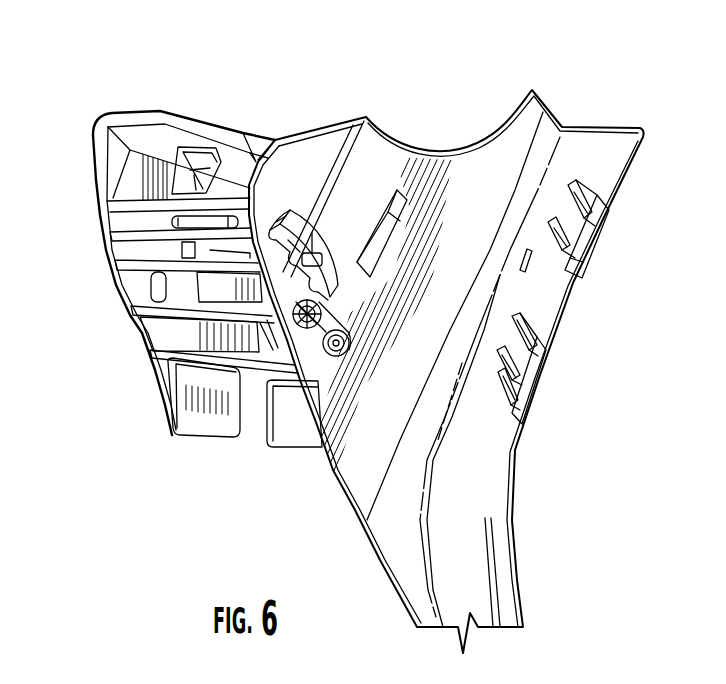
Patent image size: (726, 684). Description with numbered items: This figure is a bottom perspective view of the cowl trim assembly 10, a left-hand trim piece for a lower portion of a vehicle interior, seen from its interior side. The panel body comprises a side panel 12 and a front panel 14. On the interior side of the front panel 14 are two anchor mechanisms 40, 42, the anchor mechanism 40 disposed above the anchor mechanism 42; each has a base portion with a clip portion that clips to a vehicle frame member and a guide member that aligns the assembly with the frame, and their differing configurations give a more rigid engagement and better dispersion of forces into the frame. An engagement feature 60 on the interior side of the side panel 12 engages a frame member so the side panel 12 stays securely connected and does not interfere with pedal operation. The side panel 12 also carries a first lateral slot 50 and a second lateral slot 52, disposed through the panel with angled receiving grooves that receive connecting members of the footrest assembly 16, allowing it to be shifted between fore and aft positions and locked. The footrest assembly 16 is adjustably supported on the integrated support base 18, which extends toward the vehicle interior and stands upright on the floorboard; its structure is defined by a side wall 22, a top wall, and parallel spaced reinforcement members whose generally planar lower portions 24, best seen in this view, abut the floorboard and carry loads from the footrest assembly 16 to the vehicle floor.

The cowl trim assembly 10 is at (614, 80).
The side panel 12 is at (476, 163).
The front panel 14 is at (497, 489).
The footrest assembly 16 is at (254, 443).
The support base 18 is at (158, 103).
The side wall 22 is at (114, 154).
The planar lower portions 24 is at (140, 310).
The anchor mechanism 40 is at (598, 250).
The anchor mechanism 42 is at (542, 405).
The first lateral slot 50 is at (322, 237).
The second lateral slot 52 is at (350, 330).
The engagement feature 60 is at (381, 247).